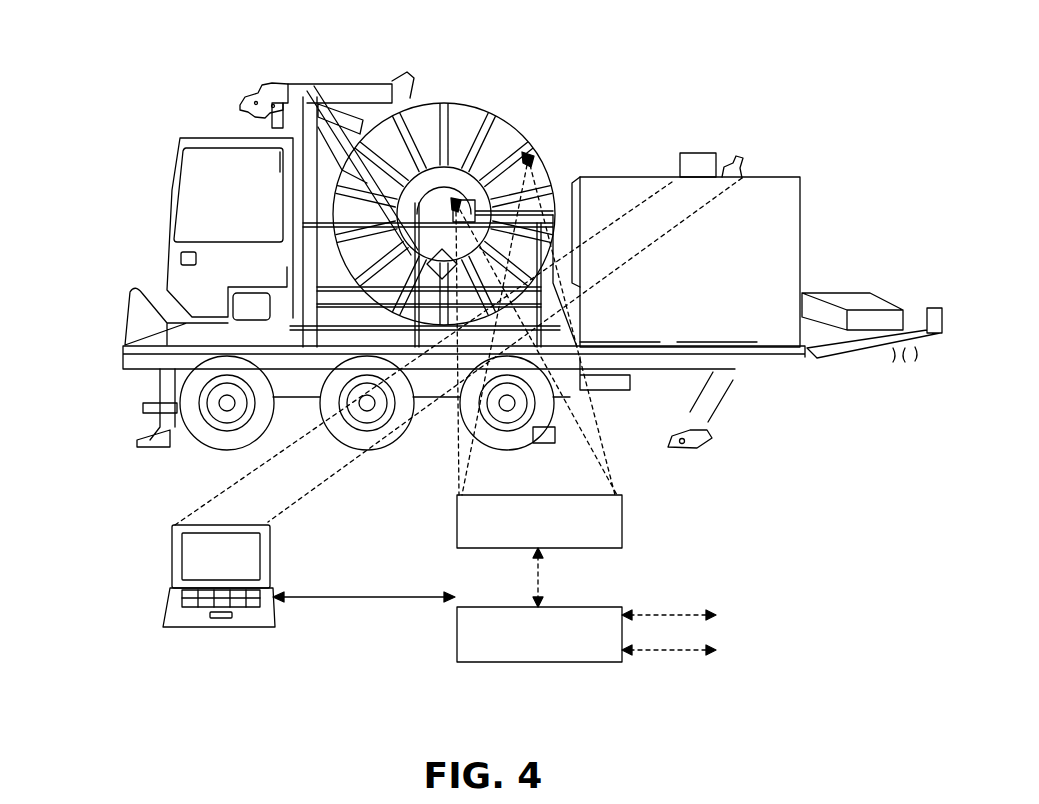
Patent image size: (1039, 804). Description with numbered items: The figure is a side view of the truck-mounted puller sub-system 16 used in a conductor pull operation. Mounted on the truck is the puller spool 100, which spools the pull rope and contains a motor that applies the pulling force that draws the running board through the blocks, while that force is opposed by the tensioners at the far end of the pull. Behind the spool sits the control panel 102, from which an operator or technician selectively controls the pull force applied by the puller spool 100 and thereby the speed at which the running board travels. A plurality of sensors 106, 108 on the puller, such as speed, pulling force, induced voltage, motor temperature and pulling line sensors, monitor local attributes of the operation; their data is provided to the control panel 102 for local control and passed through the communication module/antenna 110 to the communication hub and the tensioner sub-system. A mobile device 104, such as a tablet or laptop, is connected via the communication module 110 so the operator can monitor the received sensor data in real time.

The puller sub-system 16 is at (80, 160).
The puller spool 100 is at (471, 98).
The control panel 102 is at (773, 160).
The mobile device 104 is at (272, 558).
The sensors 106 is at (537, 158).
The sensors 108 is at (452, 200).
The communication module/antenna 110 is at (561, 607).